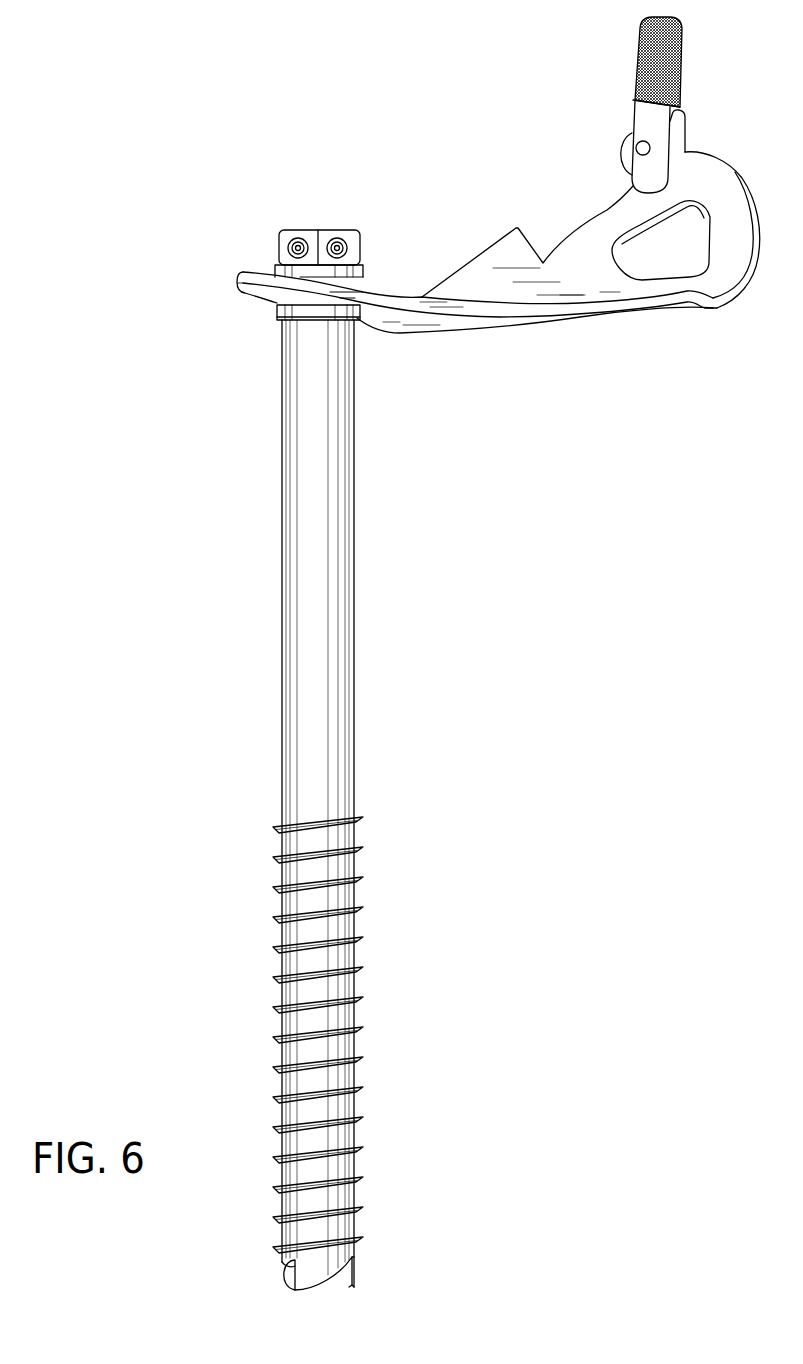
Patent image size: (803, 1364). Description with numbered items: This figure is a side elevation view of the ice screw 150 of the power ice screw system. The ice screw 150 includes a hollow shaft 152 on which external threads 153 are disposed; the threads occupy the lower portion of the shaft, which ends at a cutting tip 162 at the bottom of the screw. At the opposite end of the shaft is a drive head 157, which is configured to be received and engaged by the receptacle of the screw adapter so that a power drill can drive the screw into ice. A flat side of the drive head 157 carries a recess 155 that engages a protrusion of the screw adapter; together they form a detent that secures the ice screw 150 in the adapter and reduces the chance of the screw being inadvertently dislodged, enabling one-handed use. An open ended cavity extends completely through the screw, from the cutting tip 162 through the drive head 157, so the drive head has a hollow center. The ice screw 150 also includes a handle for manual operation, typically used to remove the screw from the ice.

The ice screw 150 is at (157, 172).
The hollow shaft 152 is at (355, 568).
The external threads 153 is at (235, 812).
The recess 155 is at (298, 240).
The drive head 157 is at (338, 238).
The cutting tip 162 is at (307, 1288).